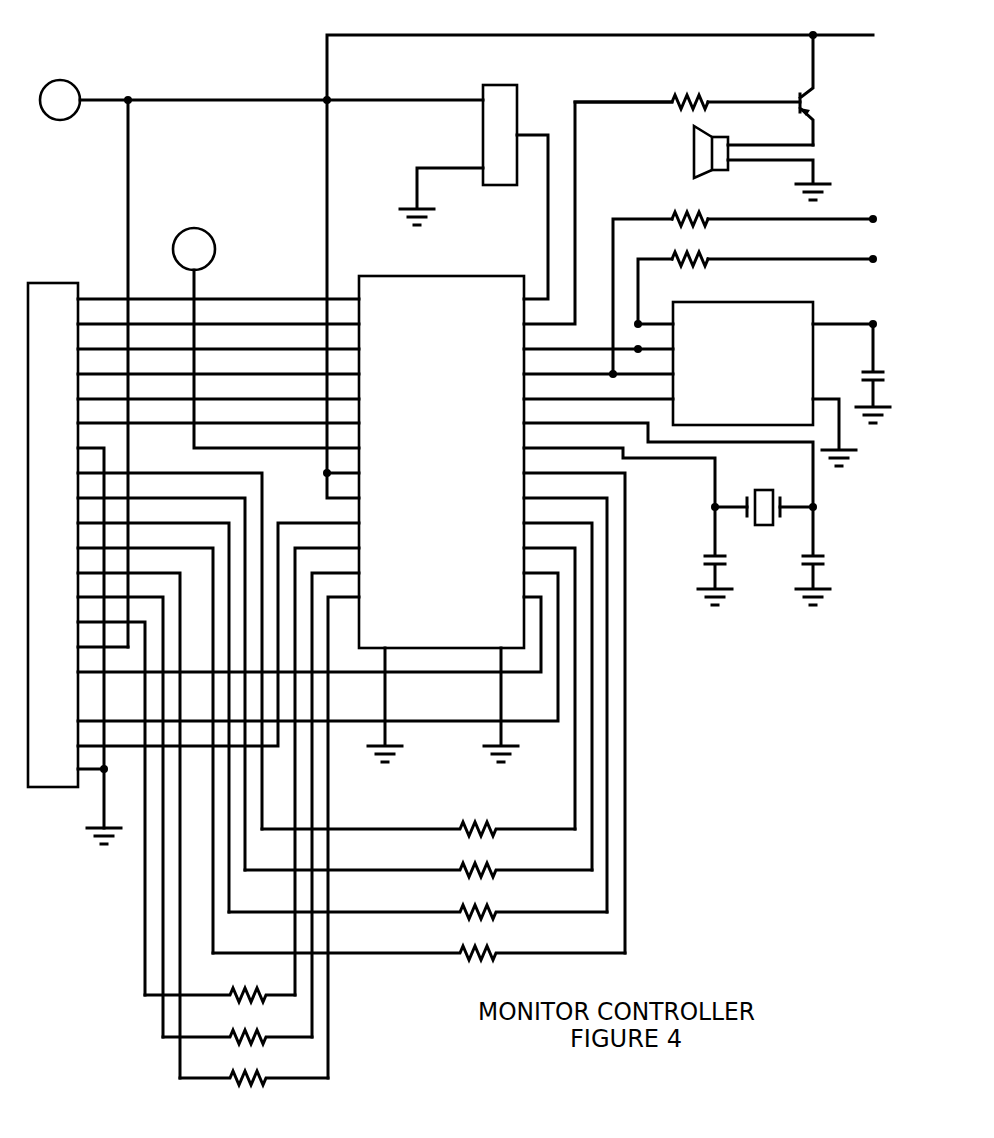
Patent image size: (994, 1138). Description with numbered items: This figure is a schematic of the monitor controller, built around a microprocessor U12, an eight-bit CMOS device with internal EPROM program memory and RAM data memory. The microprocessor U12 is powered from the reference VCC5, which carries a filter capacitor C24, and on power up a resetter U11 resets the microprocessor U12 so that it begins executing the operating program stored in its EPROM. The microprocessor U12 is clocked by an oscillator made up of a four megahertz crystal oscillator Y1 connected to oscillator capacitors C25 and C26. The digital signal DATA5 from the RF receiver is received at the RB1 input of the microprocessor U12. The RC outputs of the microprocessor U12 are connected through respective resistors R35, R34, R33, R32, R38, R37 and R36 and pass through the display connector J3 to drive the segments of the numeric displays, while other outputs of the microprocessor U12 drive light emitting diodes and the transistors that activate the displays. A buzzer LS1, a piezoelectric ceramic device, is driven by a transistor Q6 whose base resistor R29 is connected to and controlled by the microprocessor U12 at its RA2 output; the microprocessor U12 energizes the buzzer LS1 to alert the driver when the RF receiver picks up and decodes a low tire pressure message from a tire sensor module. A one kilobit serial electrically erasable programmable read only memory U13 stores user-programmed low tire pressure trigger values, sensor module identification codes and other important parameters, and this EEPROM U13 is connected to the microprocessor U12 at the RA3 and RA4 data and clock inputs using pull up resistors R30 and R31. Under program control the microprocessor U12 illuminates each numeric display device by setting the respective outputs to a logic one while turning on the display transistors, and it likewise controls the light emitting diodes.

The reference VCC5 is at (60, 85).
The digital signal Data5 DATA5 is at (230, 248).
The display connector J3 is at (53, 520).
The resetter U11 is at (500, 119).
The microprocessor U12 is at (441, 448).
The serial electrically erasable programmable read only memory (EEPROM) U13 is at (743, 349).
The base resistor R29 is at (642, 89).
The transistor Q6 is at (824, 90).
The buzzer LS1 is at (692, 152).
The pull up resistor R30 is at (670, 208).
The pull up resistor R31 is at (670, 248).
The filter capacitor C24 is at (862, 373).
The crystal oscillator Y1 is at (763, 495).
The oscillator capacitor C25 is at (700, 556).
The oscillator capacitor C26 is at (831, 556).
The resistor R32 is at (418, 818).
The resistor R33 is at (418, 859).
The resistor R34 is at (418, 901).
The resistor R35 is at (419, 942).
The resistor R36 is at (220, 984).
The resistor R37 is at (237, 1026).
The resistor R38 is at (254, 1067).